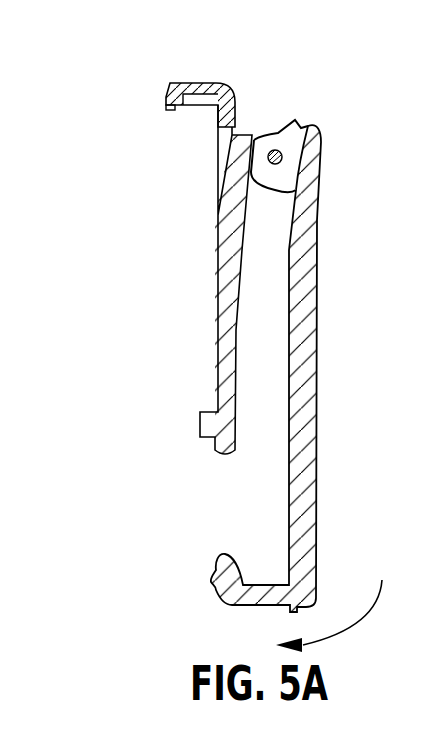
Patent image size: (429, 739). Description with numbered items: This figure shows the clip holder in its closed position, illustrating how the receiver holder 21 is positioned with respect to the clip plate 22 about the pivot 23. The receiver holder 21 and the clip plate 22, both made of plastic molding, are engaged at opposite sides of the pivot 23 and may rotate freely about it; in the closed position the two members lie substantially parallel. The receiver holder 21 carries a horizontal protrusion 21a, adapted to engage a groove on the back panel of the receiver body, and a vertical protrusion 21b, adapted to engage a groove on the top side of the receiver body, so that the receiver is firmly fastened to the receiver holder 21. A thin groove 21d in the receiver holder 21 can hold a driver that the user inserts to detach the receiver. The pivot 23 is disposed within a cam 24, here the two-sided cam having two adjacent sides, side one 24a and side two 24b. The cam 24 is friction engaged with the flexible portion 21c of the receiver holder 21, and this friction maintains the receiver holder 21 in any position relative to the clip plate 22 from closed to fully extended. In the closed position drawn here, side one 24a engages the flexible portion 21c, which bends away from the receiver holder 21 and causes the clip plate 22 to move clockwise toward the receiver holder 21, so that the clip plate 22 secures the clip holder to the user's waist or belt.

The receiver holder 21 is at (222, 319).
The horizontal protrusion 21a is at (200, 421).
The vertical protrusion 21b is at (175, 110).
The flexible portion 21c is at (232, 201).
The thin groove 21d is at (227, 85).
The clip plate 22 is at (315, 482).
The pivot 23 is at (276, 149).
The cam 24 is at (298, 160).
The side one 24a is at (256, 140).
The side two 24b is at (295, 120).